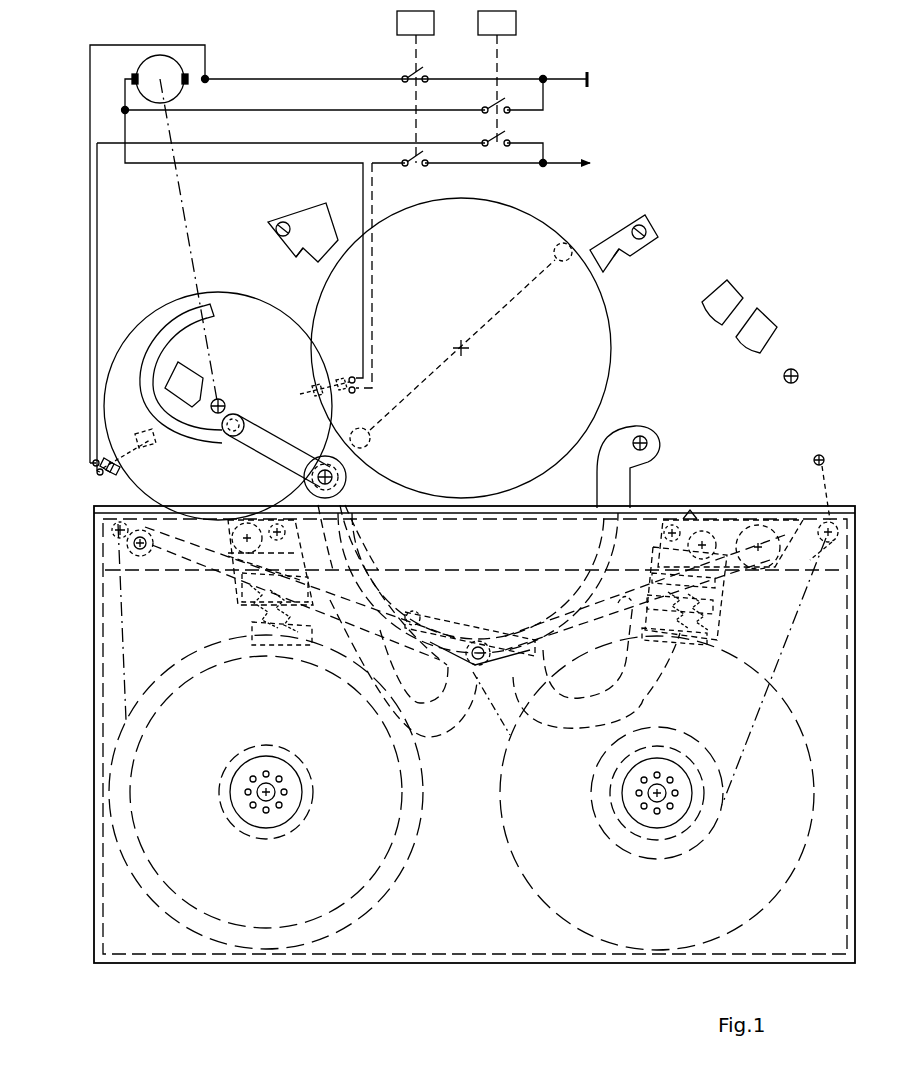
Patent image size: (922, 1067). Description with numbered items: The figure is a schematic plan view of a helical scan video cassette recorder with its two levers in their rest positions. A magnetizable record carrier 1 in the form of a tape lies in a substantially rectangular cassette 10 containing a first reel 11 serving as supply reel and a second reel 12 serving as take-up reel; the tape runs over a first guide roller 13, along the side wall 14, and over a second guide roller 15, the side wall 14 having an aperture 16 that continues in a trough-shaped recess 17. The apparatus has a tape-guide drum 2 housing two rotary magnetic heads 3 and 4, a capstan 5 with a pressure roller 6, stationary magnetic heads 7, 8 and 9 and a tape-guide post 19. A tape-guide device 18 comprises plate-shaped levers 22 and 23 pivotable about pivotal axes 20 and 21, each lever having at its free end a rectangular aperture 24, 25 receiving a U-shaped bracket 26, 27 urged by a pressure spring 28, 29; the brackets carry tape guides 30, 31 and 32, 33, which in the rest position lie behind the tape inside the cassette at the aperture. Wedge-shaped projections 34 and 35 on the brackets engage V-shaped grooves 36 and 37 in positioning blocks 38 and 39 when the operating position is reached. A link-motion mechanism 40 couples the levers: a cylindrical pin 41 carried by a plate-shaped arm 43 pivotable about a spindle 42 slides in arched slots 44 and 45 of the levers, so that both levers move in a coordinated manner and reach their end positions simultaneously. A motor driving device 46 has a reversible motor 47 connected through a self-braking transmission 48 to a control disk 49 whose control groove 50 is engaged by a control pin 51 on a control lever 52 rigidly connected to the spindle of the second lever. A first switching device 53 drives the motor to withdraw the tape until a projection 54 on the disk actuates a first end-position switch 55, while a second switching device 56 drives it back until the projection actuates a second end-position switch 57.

The magnetizable record carrier 1 is at (373, 522).
The tape-guide drum 2 is at (500, 199).
The rotary magnetic head 3 is at (369, 448).
The rotary magnetic head 4 is at (553, 250).
The capstan 5 is at (792, 369).
The pressure roller 6 is at (763, 526).
The stationary magnetic head 7 is at (762, 324).
The stationary magnetic head 8 is at (727, 298).
The stationary magnetic head 9 is at (183, 369).
The cassette 10 is at (362, 964).
The first reel 11 is at (418, 835).
The second reel 12 is at (516, 835).
The first guide roller 13 is at (120, 540).
The side wall 14 is at (525, 507).
The second guide roller 15 is at (820, 544).
The aperture 16 is at (833, 502).
The trough-shaped recess 17 is at (455, 570).
The tape-guide device 18 is at (655, 420).
The tape-guide post 19 is at (819, 455).
The pivotal axis 20 is at (640, 436).
The pivotal axis 21 is at (347, 481).
The plate-shaped lever 22 is at (300, 683).
The plate-shaped lever 23 is at (652, 692).
The rectangular aperture 24 is at (242, 612).
The rectangular aperture 25 is at (714, 605).
The U-shaped bracket 26 is at (242, 588).
The U-shaped bracket 27 is at (714, 581).
The pressure spring 28 is at (252, 634).
The pressure spring 29 is at (712, 629).
The tape guide 30 is at (238, 525).
The tape guide 31 is at (277, 524).
The tape guide 32 is at (670, 525).
The tape guide 33 is at (715, 532).
The wedge-shaped projection 34 is at (254, 516).
The wedge-shaped projection 35 is at (692, 512).
The V-shaped groove 36 is at (305, 256).
The V-shaped groove 37 is at (625, 256).
The positioning block 38 is at (312, 235).
The positioning block 39 is at (598, 243).
The link-motion mechanism 40 is at (476, 676).
The cylindrical pin 41 is at (478, 646).
The spindle 42 is at (141, 556).
The plate-shaped arm 43 is at (372, 657).
The slot 44 is at (540, 628).
The slot 45 is at (414, 612).
The motor driving device 46 is at (200, 243).
The motor 47 is at (157, 67).
The self-braking transmission 48 is at (187, 236).
The control disk 49 is at (226, 294).
The control groove 50 is at (152, 333).
The control pin 51 is at (240, 414).
The control lever 52 is at (283, 446).
The first switching device 53 is at (400, 64).
The projection 54 is at (151, 449).
The first end-position switch 55 is at (345, 374).
The second switching device 56 is at (506, 62).
The second end-position switch 57 is at (114, 474).